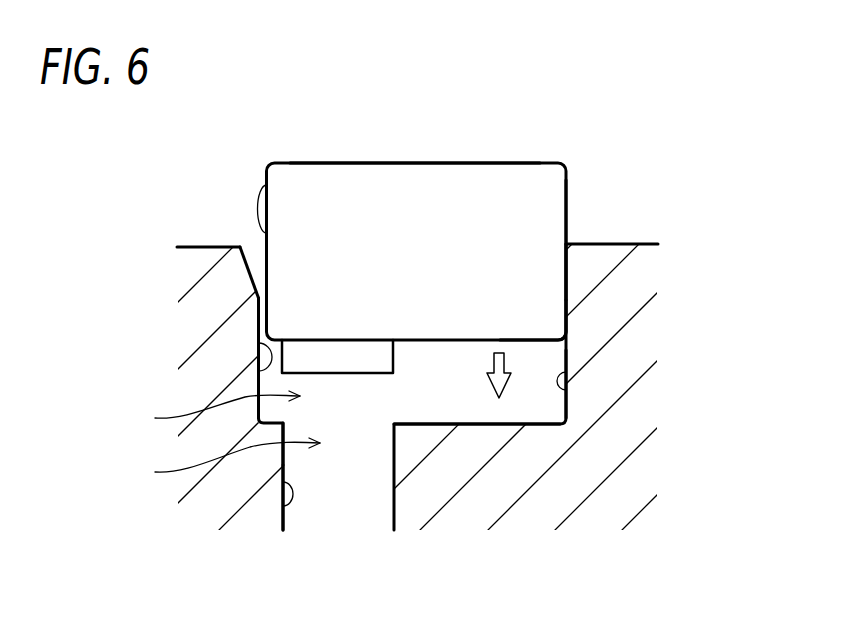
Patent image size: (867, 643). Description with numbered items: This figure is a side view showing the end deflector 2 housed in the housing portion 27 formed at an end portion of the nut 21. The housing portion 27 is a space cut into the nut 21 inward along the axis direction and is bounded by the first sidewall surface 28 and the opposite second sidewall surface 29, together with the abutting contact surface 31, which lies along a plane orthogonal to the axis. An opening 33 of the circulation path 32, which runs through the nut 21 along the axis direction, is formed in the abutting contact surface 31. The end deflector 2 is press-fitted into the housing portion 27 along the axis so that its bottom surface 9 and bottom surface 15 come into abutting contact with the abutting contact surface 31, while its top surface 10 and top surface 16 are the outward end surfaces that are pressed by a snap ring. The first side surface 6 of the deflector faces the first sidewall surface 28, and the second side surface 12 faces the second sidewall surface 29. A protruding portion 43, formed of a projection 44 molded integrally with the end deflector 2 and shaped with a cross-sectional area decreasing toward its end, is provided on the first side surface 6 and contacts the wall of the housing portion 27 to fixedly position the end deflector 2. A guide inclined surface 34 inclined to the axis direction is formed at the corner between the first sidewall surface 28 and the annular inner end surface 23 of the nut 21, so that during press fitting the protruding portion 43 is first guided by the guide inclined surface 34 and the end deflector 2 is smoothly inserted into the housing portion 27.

The end deflector 2 is at (488, 170).
The first side surface 6 is at (265, 235).
The bottom surface 9 is at (630, 330).
The top surface 10 is at (415, 137).
The second side surface 12 is at (567, 180).
The bottom surface 15 is at (540, 340).
The top surface 16 is at (330, 163).
The nut 21 is at (607, 252).
The inner end surface 23 is at (192, 247).
The housing portion 27 is at (208, 410).
The first sidewall surface 28 is at (258, 342).
The second sidewall surface 29 is at (566, 390).
The abutting contact surface 31 is at (520, 423).
The circulation path 32 is at (283, 482).
The opening 33 is at (218, 454).
The guide inclined surface 34 is at (247, 254).
The protruding portion 43 is at (258, 200).
The projection 44 is at (197, 187).